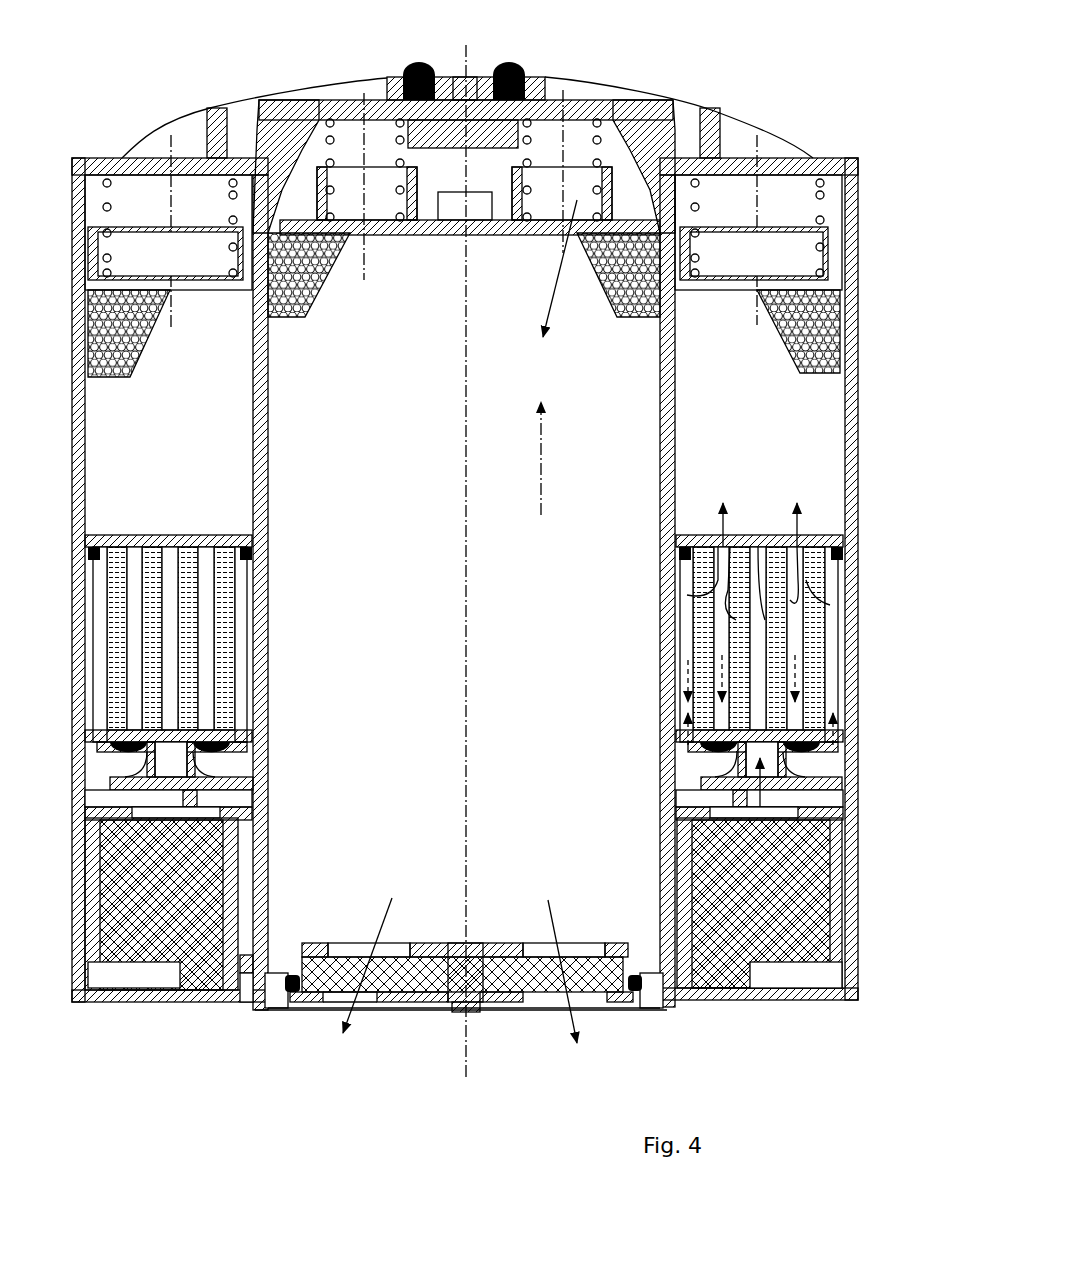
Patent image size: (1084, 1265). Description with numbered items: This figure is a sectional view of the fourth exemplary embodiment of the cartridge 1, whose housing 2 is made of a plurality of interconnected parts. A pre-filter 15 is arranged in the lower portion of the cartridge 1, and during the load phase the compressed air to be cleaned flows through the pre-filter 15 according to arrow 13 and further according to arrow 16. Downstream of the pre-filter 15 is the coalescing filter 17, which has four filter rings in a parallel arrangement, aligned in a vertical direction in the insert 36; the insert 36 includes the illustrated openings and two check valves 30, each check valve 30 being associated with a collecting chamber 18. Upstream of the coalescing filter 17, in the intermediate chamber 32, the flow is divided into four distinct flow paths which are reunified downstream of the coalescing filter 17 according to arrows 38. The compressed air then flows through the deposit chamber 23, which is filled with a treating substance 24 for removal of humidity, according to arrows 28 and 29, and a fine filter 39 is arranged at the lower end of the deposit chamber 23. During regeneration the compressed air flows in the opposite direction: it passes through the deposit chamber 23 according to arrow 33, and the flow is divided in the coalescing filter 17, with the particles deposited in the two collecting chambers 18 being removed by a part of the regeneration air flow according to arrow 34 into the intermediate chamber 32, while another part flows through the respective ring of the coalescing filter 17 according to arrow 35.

The cartridge 1 is at (686, 74).
The housing 2 is at (822, 156).
The arrow 13 is at (827, 1042).
The pre-filter 15 is at (832, 868).
The arrow 16 is at (830, 758).
The coalescing filter 17 is at (845, 604).
The collecting chamber 18 is at (723, 715).
The deposit chamber 23 is at (597, 589).
The treating substance 24 is at (290, 257).
The arrow 28 is at (553, 300).
The arrow 29 is at (363, 980).
The check valve 30 is at (827, 740).
The intermediate chamber 32 is at (827, 792).
The arrow 33 is at (541, 453).
The arrow 34 is at (797, 667).
The arrow 35 is at (693, 647).
The insert 36 is at (823, 535).
The arrows 38 is at (727, 520).
The fine filter 39 is at (537, 975).